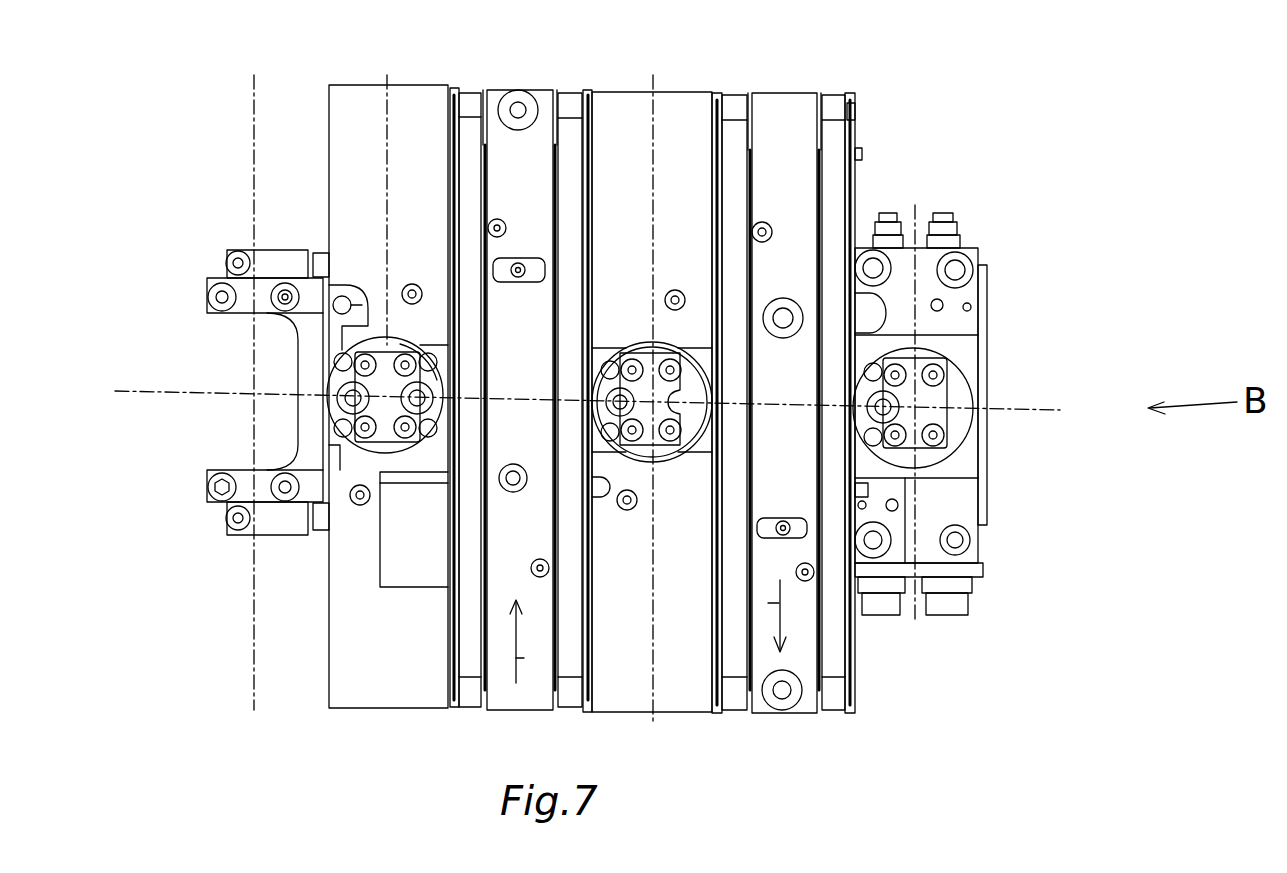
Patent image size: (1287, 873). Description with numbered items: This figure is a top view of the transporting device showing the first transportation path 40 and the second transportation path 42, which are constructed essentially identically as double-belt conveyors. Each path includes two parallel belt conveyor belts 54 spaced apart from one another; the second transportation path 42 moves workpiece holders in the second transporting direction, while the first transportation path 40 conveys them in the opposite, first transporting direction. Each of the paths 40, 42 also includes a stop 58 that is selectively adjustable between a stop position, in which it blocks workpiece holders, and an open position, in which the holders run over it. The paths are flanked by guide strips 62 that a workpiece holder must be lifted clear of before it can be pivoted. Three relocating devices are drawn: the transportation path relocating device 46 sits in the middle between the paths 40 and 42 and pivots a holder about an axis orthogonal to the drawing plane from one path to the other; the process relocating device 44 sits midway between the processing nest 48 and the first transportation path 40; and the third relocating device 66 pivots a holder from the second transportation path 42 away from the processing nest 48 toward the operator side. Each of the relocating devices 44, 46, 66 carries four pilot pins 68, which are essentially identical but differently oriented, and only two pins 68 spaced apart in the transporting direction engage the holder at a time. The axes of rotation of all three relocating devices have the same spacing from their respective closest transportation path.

The first transportation path 40 is at (518, 112).
The second transportation path 42 is at (780, 112).
The process relocating device 44 is at (385, 345).
The transportation path relocating device 46 is at (660, 445).
The processing nest 48 is at (278, 268).
The belt conveyor belt 54 is at (548, 192).
The stop 58 is at (505, 284).
The guide strip 62 is at (716, 103).
The third relocating device 66 is at (928, 262).
The pilot pin 68 is at (368, 372).